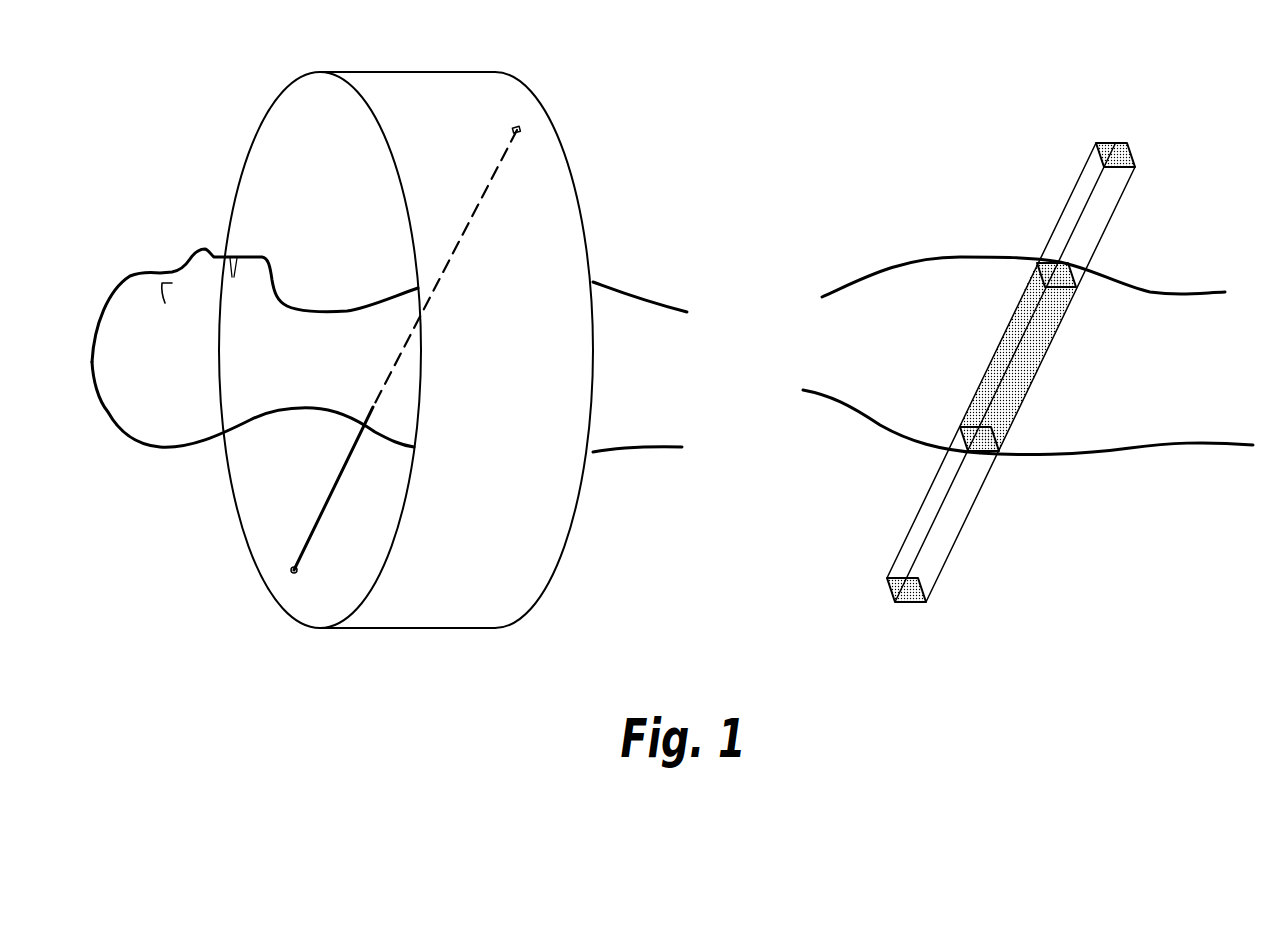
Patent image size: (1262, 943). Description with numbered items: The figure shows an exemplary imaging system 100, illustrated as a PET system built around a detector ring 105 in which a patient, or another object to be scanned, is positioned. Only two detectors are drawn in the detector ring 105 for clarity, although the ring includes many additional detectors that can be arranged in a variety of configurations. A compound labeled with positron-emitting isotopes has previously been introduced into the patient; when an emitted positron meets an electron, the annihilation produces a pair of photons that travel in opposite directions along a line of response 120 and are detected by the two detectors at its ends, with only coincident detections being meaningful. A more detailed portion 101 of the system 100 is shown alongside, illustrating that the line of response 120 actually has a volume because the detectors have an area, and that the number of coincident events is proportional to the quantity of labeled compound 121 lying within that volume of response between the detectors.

The imaging system 100 is at (148, 163).
The portion 101 is at (968, 198).
The detector ring 105 is at (513, 575).
The line of response 120 is at (322, 503).
The labeled compound 121 is at (978, 362).